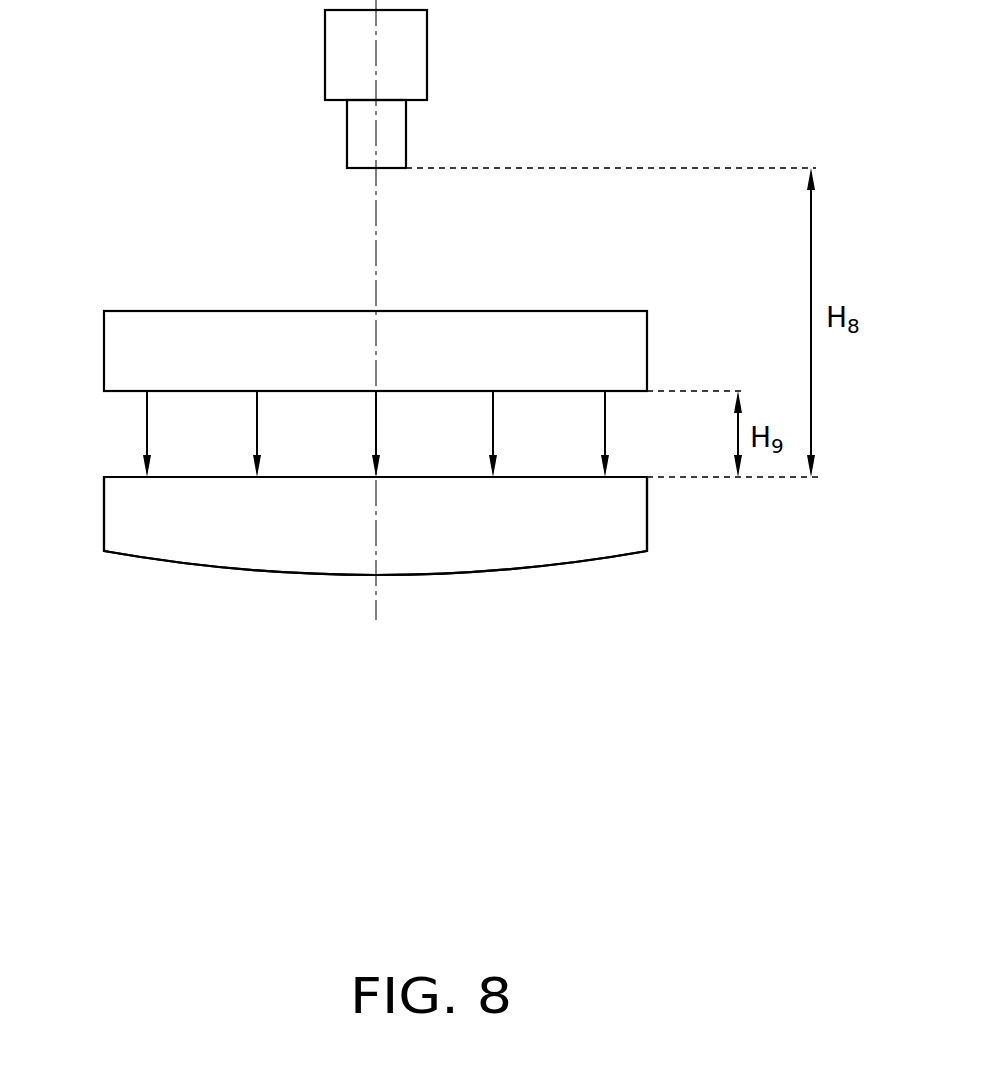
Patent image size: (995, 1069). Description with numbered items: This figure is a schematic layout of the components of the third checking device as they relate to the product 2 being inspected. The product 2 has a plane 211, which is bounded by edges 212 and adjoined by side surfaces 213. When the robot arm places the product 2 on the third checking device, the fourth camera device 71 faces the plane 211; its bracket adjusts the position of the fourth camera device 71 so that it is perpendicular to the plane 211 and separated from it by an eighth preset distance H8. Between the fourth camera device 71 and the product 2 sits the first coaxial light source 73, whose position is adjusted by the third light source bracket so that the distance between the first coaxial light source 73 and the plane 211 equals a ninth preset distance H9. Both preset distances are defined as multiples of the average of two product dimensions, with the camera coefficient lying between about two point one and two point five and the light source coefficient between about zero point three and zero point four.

The fourth camera device 71 is at (397, 48).
The first coaxial light source 73 is at (620, 348).
The product 2 is at (258, 553).
The plane 211 is at (437, 480).
The edges 212 is at (104, 477).
The side surfaces 213 is at (648, 507).